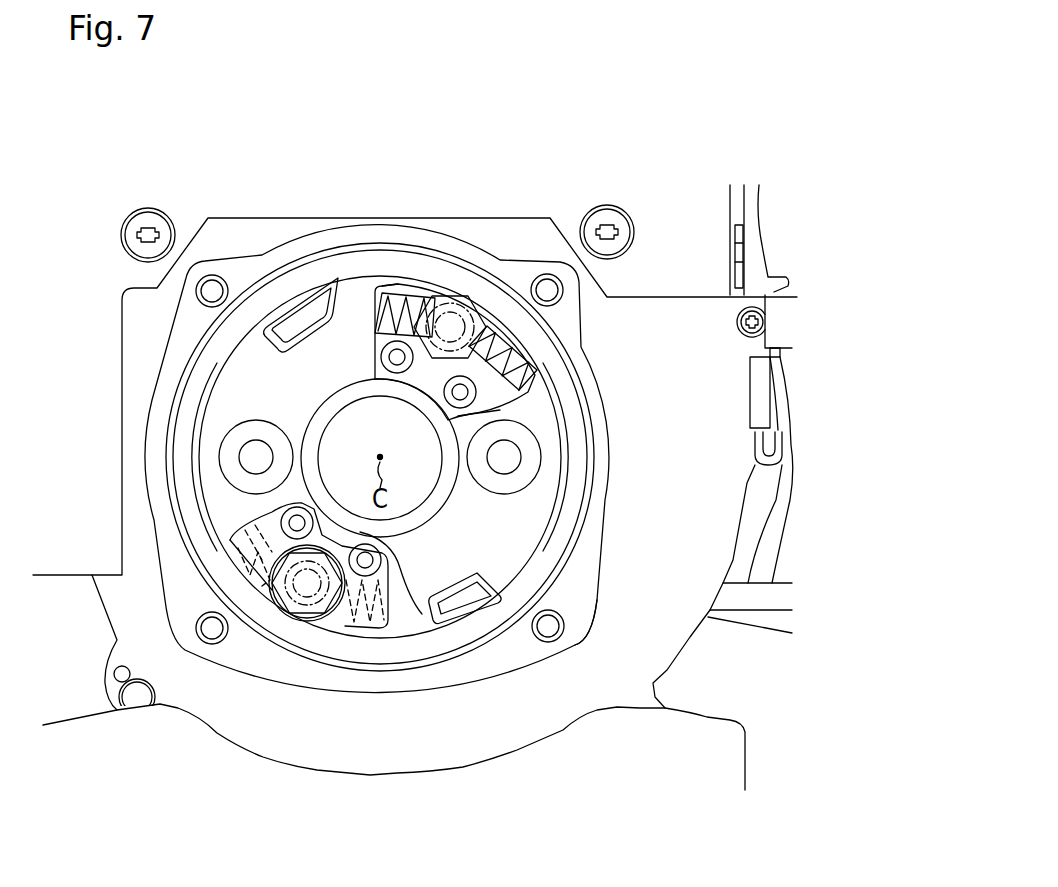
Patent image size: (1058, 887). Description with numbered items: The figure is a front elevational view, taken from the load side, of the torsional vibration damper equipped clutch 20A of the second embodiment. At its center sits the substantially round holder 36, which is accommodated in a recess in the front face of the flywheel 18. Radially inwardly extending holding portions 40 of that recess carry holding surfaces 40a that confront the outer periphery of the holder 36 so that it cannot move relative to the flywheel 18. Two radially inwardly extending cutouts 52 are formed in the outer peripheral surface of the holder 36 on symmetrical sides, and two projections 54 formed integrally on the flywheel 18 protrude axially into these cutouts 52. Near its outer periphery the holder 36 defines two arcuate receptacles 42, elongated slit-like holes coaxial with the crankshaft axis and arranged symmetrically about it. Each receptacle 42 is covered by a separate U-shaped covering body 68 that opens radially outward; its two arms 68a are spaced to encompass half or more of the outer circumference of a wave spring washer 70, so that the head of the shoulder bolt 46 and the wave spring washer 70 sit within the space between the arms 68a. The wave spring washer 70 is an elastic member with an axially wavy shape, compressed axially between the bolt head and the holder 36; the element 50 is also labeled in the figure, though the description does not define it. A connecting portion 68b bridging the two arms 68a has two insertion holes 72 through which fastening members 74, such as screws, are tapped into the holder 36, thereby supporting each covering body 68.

The flywheel 18 is at (578, 486).
The torsional vibration damper equipped clutch 20A is at (178, 187).
The holder 36 is at (215, 428).
The holding portion 40 is at (582, 608).
The holding surface 40a is at (520, 620).
The arcuate receptacle 42 is at (452, 312).
The shoulder bolt 46 is at (478, 322).
The spring 50 is at (415, 296).
The cutout 52 is at (316, 298).
The projection 54 is at (298, 322).
The covering body 68 is at (365, 372).
The arm 68a is at (405, 296).
The connecting portion 68b is at (458, 425).
The wave spring washer 70 is at (492, 345).
The insertion hole 72 is at (386, 348).
The fastening member 74 is at (372, 322).